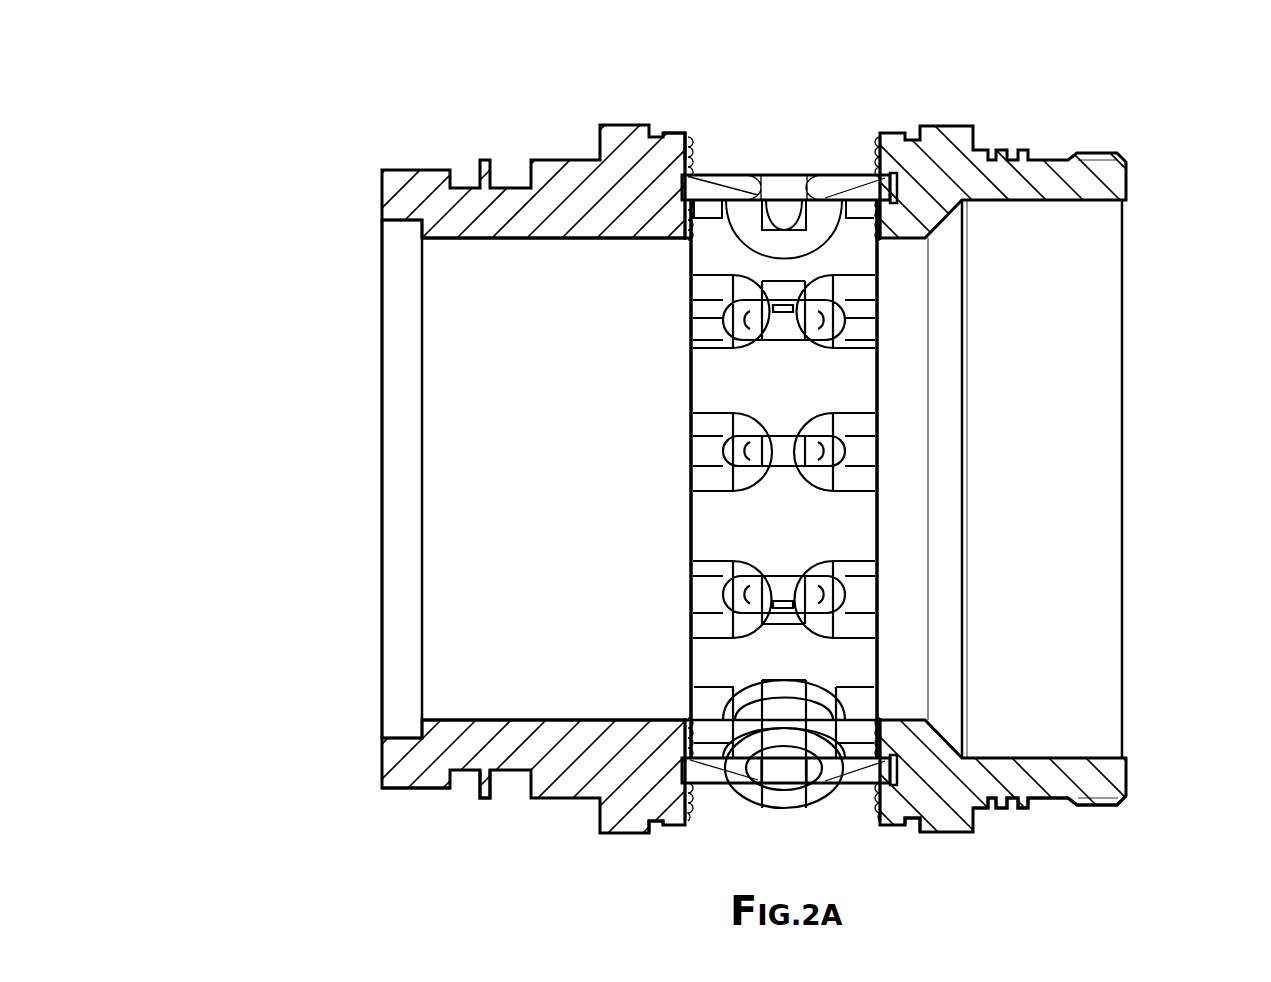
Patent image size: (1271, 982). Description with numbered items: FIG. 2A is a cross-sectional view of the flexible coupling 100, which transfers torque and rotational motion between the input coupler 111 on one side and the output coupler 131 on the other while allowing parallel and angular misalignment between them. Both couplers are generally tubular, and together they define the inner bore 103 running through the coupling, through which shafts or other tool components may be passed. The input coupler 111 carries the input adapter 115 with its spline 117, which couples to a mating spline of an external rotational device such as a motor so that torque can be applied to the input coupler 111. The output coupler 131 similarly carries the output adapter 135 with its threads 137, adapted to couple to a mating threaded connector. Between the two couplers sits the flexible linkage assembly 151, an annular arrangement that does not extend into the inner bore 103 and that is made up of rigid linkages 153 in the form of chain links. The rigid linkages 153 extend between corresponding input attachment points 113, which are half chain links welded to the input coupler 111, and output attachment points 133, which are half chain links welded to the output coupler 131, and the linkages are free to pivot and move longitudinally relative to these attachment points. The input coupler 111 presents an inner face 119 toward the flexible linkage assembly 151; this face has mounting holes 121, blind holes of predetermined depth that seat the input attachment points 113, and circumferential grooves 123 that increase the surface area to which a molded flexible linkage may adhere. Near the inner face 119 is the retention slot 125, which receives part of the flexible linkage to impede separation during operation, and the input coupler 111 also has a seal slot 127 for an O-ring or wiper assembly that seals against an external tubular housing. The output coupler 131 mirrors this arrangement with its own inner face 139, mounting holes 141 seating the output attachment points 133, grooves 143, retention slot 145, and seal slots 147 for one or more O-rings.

The flexible coupling 100 is at (274, 98).
The inner bore 103 is at (500, 533).
The input coupler 111 is at (382, 65).
The input attachment points 113 is at (710, 785).
The input adapter 115 is at (345, 626).
The spline 117 is at (403, 790).
The inner face 119 is at (710, 158).
The mounting holes 121 is at (680, 185).
The grooves 123 is at (688, 138).
The retention slot 125 is at (658, 822).
The seal slot 127 is at (507, 775).
The output coupler 131 is at (877, 65).
The output attachment points 133 is at (860, 778).
The output adapter 135 is at (1140, 633).
The threads 137 is at (1097, 802).
The inner face 139 is at (870, 166).
The mounting holes 141 is at (888, 175).
The grooves 143 is at (882, 140).
The retention slot 145 is at (920, 824).
The seal slots 147 is at (1005, 802).
The flexible linkage assembly 151 is at (685, 65).
The rigid linkages 153 is at (770, 800).